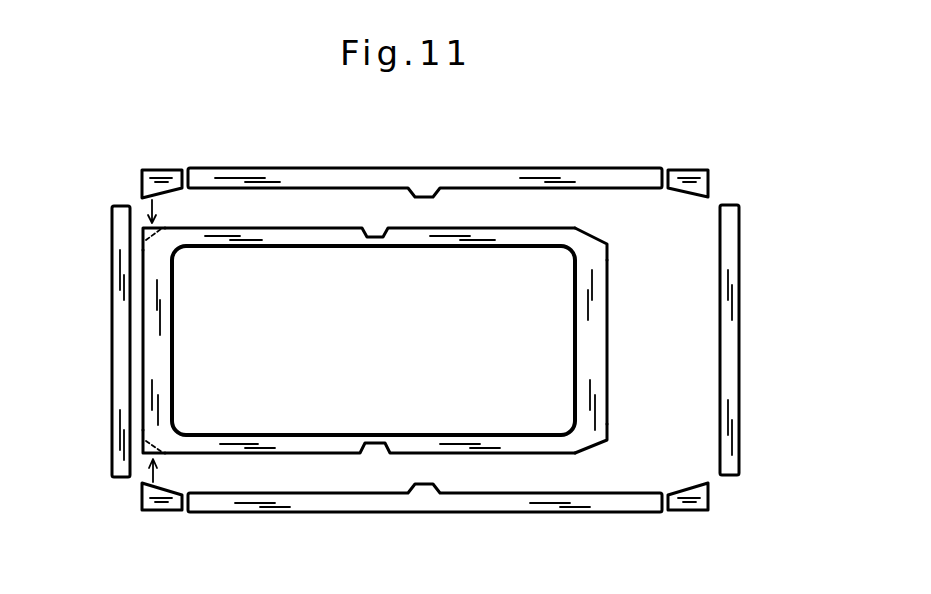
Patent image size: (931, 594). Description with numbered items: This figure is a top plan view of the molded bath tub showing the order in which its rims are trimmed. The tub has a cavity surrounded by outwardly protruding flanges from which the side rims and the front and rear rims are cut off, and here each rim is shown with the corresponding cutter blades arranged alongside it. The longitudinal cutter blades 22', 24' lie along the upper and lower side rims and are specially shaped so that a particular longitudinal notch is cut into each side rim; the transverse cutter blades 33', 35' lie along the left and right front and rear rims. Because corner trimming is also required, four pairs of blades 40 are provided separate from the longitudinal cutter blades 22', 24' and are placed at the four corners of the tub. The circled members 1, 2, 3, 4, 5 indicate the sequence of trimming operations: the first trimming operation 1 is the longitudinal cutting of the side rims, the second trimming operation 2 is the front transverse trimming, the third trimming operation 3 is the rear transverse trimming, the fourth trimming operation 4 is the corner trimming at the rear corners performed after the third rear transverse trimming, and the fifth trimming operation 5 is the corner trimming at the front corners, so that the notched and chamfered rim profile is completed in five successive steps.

The first trimming operation 1 is at (513, 228).
The second trimming operation 2 is at (157, 345).
The third trimming operation 3 is at (607, 338).
The fourth trimming operation 4 is at (585, 232).
The fifth trimming operation 5 is at (148, 227).
The longitudinal cutter blade 22' is at (425, 341).
The longitudinal cutter blade 24' is at (425, 341).
The transverse cutter blade 33' is at (428, 341).
The transverse cutter blade 35' is at (428, 341).
The corner trimming blade 40 is at (165, 178).